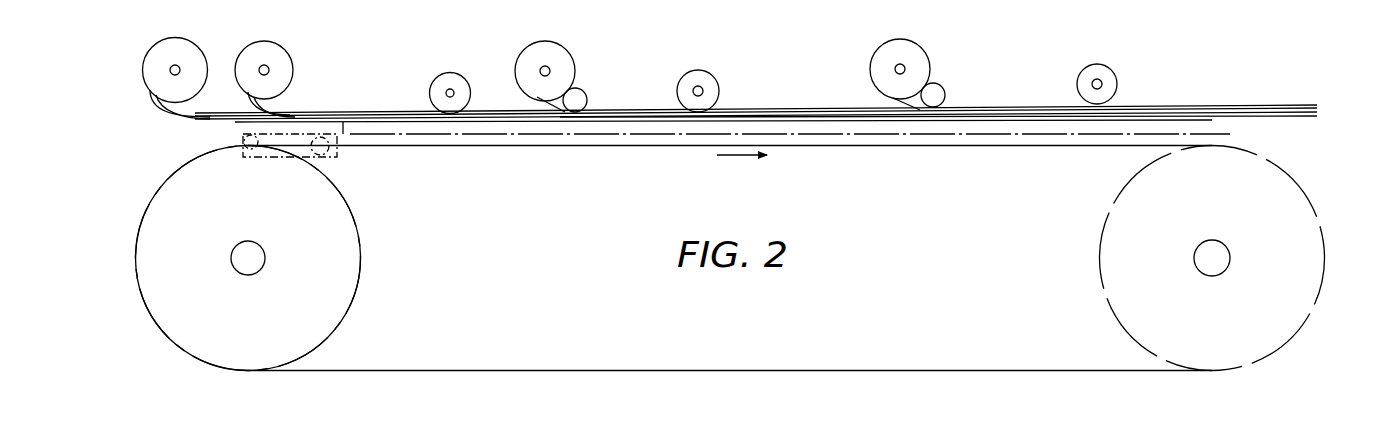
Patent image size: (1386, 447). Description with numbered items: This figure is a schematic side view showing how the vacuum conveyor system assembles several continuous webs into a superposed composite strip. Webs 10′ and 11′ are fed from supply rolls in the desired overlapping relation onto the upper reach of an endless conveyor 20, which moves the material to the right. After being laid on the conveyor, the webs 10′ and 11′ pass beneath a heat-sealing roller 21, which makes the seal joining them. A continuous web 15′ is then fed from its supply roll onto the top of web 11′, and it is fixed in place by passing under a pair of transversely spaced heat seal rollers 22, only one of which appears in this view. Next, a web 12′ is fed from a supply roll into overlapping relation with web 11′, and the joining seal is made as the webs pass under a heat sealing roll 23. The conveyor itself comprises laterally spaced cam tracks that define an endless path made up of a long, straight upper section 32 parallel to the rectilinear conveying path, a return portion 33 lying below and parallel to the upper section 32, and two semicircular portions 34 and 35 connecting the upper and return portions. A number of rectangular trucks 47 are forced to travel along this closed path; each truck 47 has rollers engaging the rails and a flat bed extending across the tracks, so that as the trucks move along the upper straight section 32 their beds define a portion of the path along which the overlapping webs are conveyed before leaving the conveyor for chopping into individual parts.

The web 10′ is at (193, 120).
The web 11′ is at (270, 108).
The heat-sealing roller 21 is at (447, 73).
The continuous web 15′ is at (560, 111).
The heat seal rollers 22 is at (710, 72).
The web 12′ is at (917, 108).
The heat sealing roll 23 is at (1107, 65).
The endless conveyor 20 is at (148, 203).
The semicircular portion 35 is at (136, 270).
The truck 47 is at (341, 159).
The upper straight section 32 is at (848, 148).
The return portion 33 is at (764, 362).
The semicircular portion 34 is at (1329, 263).